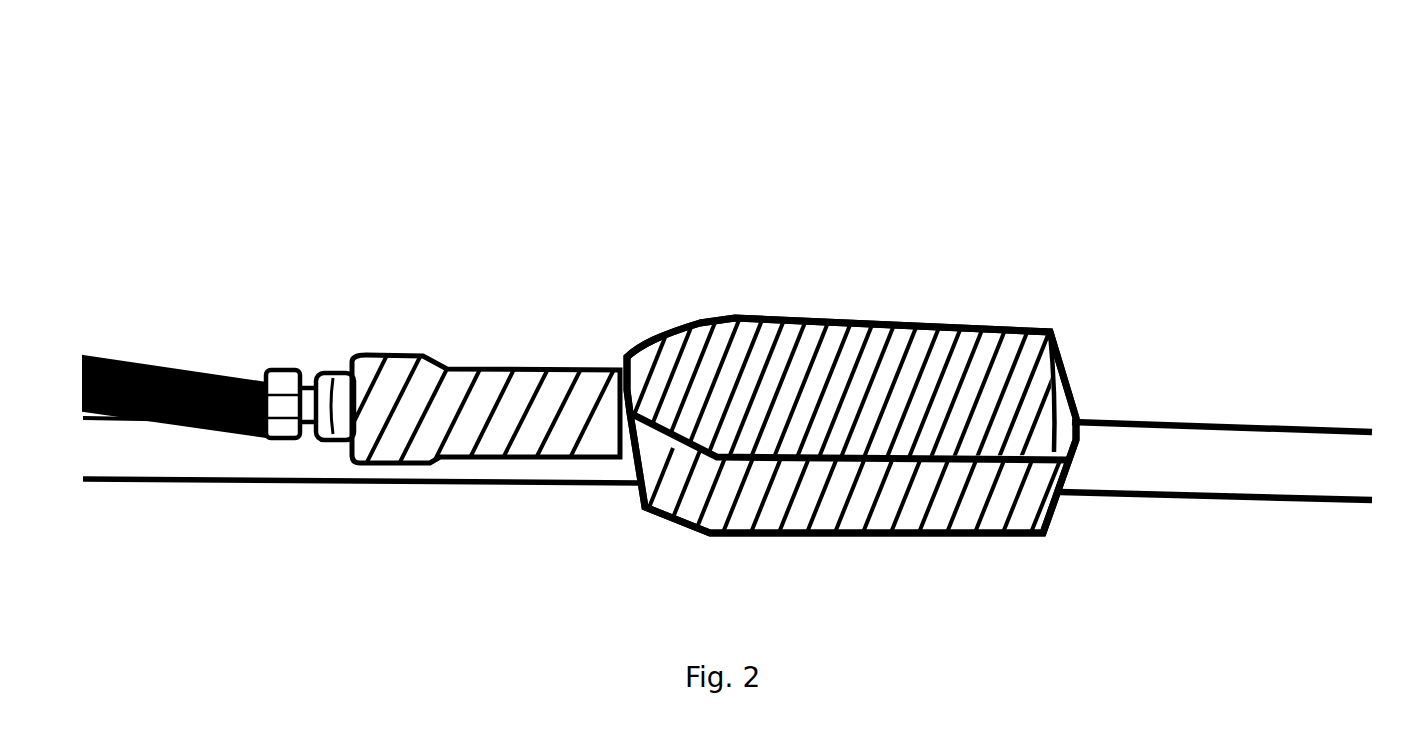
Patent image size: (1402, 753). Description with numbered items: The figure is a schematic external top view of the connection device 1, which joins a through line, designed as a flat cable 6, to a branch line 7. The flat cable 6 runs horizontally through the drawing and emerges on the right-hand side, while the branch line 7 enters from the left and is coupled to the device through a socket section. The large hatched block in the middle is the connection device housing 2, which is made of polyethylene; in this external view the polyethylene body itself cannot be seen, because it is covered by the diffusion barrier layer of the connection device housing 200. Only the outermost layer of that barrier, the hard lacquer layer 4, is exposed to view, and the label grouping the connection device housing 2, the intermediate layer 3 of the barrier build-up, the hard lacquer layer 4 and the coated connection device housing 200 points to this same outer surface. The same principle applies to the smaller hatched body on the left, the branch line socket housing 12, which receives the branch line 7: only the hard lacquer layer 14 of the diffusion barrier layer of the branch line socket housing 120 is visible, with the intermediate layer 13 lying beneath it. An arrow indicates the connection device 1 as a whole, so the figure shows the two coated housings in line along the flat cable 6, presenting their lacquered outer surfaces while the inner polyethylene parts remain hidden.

The connection device 1 is at (628, 532).
The connection device housing 2 is at (846, 391).
The upper housing part 3 is at (846, 391).
The hard lacquer layer 4 is at (846, 391).
The connection device housing 200 is at (843, 355).
The flat cable 6 is at (1243, 423).
The branch line 7 is at (177, 370).
The branch line socket housing 12 is at (446, 376).
The connector nut 13 is at (446, 376).
The hard lacquer layer 14 is at (446, 376).
The branch line socket housing 120 is at (517, 407).